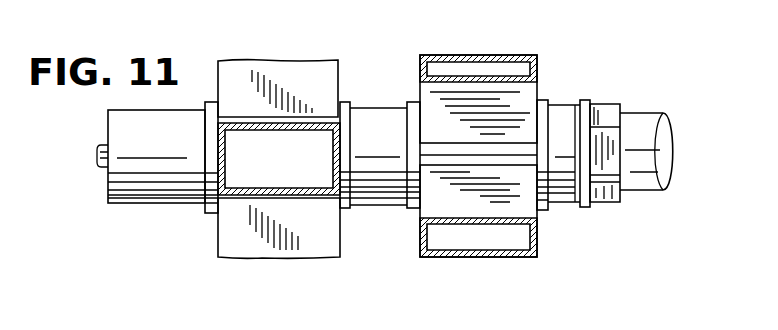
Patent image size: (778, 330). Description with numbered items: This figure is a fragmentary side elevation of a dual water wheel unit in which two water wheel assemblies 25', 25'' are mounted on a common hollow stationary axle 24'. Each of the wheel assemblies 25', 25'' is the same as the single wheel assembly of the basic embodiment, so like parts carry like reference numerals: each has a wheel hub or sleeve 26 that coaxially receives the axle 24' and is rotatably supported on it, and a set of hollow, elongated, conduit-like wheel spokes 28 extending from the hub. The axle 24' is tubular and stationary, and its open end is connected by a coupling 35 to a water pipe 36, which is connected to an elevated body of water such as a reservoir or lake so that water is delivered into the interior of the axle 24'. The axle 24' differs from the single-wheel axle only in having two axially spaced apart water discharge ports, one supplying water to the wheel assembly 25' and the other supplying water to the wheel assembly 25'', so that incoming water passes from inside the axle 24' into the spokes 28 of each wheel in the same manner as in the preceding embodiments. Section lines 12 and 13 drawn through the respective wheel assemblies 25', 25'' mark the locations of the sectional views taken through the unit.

The section line 12- 12 is at (292, 88).
The section line 13- 13 is at (458, 42).
The common hollow stationary axle 24' is at (338, 176).
The water wheel assembly 25' is at (312, 136).
The water wheel assembly 25'' is at (520, 136).
The wheel hub or sleeve 26 is at (350, 102).
The wheel spokes 28 is at (236, 60).
The coupling 35 is at (600, 108).
The water pipe 36 is at (668, 118).